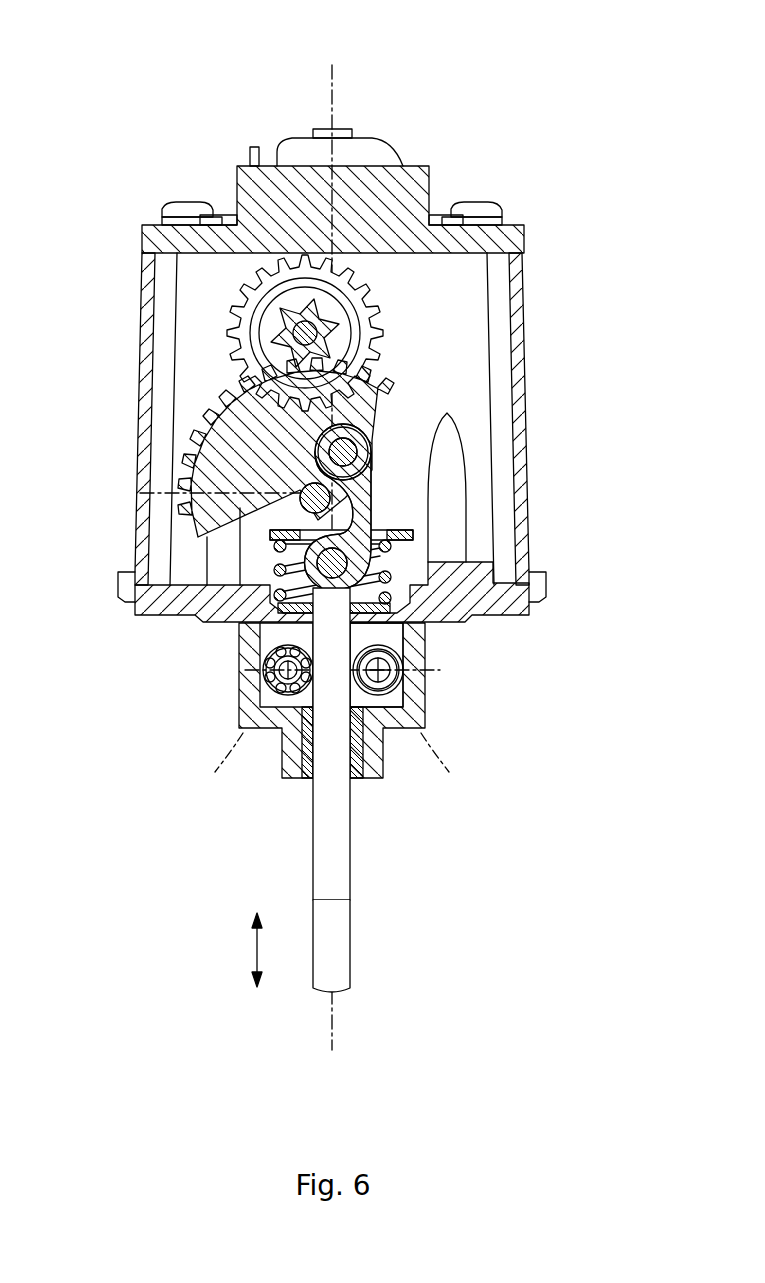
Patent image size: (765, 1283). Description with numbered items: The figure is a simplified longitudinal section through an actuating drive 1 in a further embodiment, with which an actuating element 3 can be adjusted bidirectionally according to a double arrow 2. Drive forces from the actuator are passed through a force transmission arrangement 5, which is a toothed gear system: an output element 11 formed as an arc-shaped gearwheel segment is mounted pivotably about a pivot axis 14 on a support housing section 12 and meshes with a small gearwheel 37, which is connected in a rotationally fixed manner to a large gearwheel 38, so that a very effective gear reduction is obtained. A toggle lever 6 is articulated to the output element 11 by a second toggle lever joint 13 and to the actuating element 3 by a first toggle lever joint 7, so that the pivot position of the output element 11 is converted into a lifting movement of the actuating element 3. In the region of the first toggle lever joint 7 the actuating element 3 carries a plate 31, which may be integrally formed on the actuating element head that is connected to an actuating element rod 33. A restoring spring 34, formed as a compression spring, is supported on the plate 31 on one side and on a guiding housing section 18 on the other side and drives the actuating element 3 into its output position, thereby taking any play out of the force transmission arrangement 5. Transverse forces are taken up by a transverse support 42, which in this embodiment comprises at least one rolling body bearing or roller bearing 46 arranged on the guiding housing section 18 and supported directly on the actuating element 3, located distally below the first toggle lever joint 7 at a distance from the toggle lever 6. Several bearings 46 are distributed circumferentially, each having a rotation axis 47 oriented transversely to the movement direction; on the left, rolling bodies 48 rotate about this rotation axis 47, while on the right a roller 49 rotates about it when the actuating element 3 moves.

The actuating drive 1 is at (366, 532).
The double arrow 2 is at (255, 948).
The actuating element 3 is at (356, 885).
The force transmission arrangement 5 is at (445, 365).
The toggle lever 6 is at (378, 480).
The first toggle lever joint 7 is at (360, 563).
The output element 11 is at (200, 440).
The support housing section 12 is at (524, 302).
The second toggle lever joint 13 is at (345, 428).
The pivot axis 14 is at (175, 493).
The guiding housing section 18 is at (245, 687).
The plate 31 is at (413, 535).
The actuating element rod 33 is at (343, 925).
The restoring spring 34 is at (278, 567).
The small gearwheel 37 is at (268, 330).
The large gearwheel 38 is at (235, 290).
The transverse support 42 is at (385, 638).
The rolling body bearing 46 is at (265, 650).
The rotation axis 47 is at (331, 762).
The rolling bodies 48 is at (288, 690).
The roller 49 is at (378, 690).